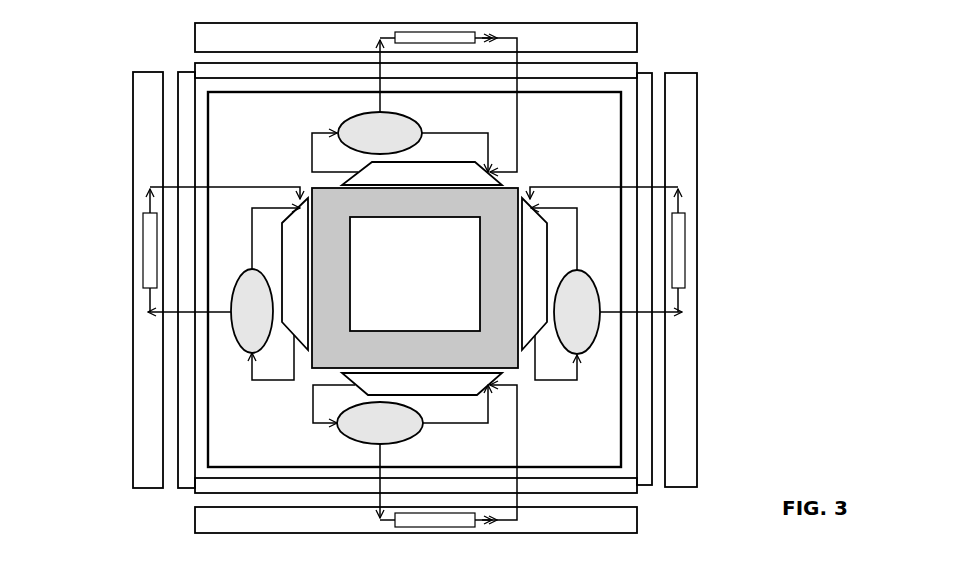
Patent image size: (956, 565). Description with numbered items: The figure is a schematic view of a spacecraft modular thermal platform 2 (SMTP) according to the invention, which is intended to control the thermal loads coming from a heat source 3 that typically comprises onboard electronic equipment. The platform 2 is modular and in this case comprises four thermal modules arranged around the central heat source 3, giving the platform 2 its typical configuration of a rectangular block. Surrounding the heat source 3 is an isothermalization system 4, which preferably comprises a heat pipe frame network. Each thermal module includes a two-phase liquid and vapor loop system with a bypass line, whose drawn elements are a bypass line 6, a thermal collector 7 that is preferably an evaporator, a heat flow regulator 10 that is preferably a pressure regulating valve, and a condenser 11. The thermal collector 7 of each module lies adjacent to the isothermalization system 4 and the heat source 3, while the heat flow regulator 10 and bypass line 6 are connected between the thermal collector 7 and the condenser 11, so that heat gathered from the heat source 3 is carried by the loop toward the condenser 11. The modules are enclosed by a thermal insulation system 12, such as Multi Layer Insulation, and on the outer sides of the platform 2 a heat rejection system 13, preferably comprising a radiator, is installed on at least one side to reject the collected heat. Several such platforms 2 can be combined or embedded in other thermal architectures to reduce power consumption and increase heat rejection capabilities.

The spacecraft modular thermal platform 2 is at (100, 460).
The heat source 3 is at (415, 274).
The isothermalization system 4 is at (415, 278).
The bypass line 6 is at (413, 278).
The thermal collector 7 is at (414, 278).
The heat flow regulator 10 is at (415, 278).
The condenser 11 is at (448, 39).
The thermal insulation system 12 is at (218, 75).
The heat rejection system 13 is at (415, 278).